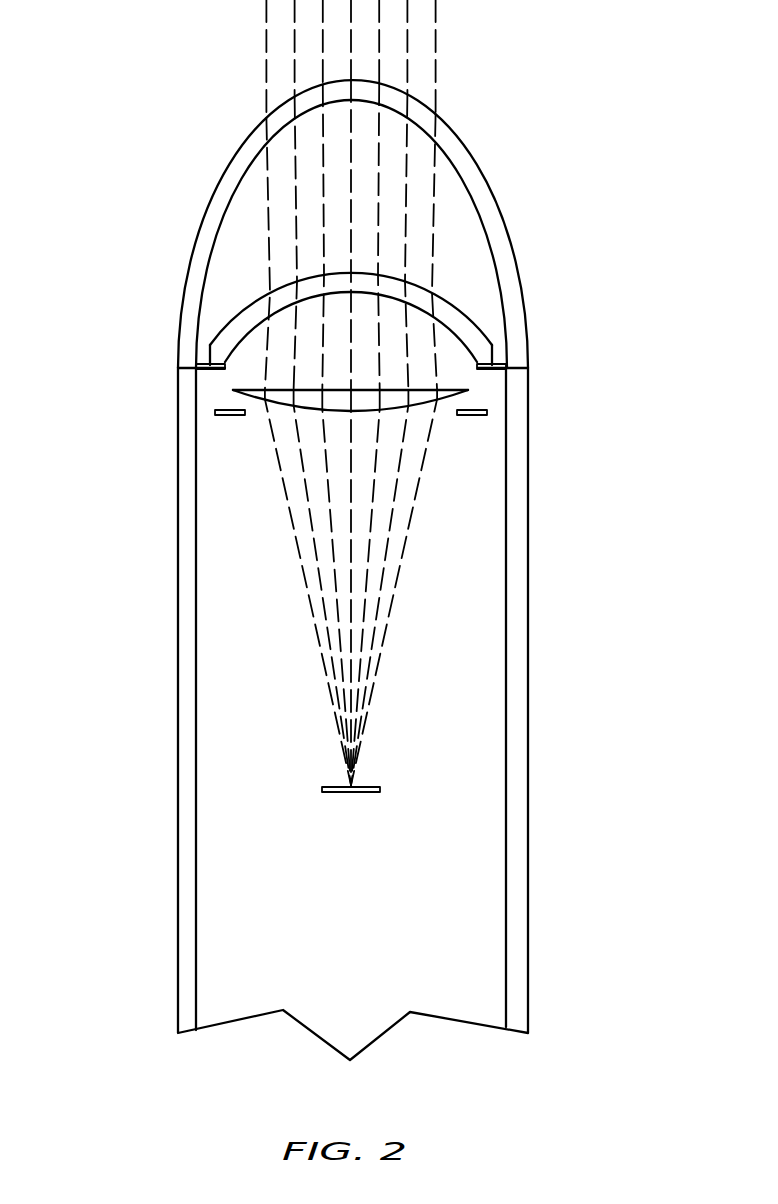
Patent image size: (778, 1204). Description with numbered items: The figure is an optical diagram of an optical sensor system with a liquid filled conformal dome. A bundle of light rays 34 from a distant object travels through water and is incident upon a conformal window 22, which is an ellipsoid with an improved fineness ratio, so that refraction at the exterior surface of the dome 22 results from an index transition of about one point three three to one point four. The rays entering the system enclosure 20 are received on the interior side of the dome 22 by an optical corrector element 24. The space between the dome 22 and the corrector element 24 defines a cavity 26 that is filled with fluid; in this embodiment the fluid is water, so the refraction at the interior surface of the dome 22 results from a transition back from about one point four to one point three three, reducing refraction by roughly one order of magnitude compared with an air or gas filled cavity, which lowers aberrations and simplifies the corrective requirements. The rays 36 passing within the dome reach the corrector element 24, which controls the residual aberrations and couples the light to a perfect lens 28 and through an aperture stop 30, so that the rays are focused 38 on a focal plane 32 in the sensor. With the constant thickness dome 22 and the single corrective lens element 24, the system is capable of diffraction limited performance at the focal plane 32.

The system enclosure 20 is at (177, 794).
The conformal window 22 is at (498, 207).
The optical corrector element 24 is at (470, 318).
The cavity 26 is at (453, 213).
The perfect lens 28 is at (462, 397).
The aperture stop 30 is at (230, 416).
The focal plane 32 is at (382, 786).
The light rays 34 is at (250, 48).
The light rays within dome 36 is at (255, 226).
The focused light rays 38 is at (275, 630).